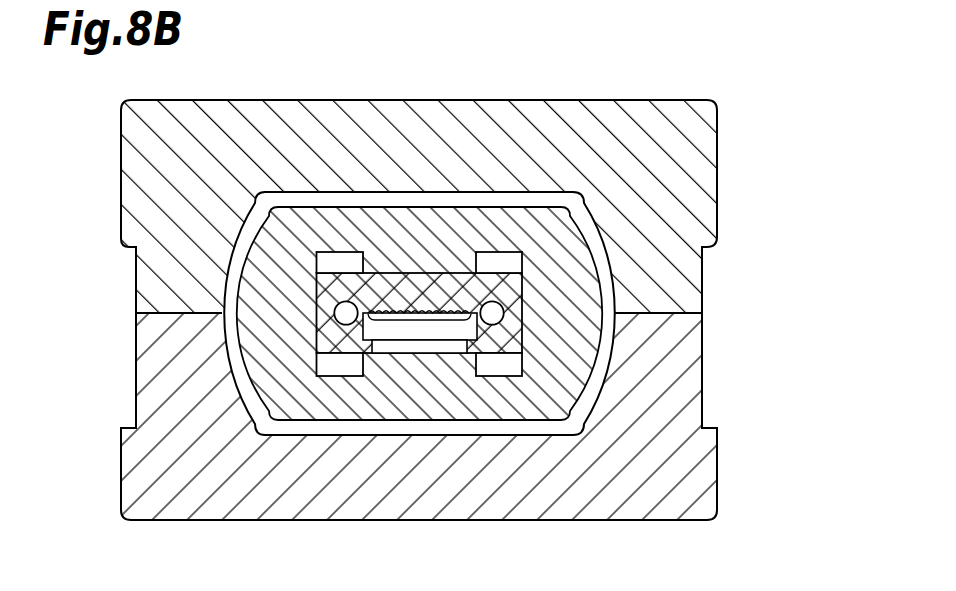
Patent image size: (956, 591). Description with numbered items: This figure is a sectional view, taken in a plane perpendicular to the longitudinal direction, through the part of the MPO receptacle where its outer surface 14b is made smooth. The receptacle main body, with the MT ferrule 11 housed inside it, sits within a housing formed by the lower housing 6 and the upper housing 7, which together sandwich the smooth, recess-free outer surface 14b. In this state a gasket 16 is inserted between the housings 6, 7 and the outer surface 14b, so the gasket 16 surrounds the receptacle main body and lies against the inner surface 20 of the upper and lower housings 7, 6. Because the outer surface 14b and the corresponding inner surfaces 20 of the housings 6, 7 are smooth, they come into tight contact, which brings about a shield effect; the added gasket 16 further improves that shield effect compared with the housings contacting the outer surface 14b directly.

The upper housing 7 is at (688, 147).
The lower housing 6 is at (668, 478).
The gasket 16 is at (578, 209).
The inner surface 20 is at (590, 236).
The outer surface 14b is at (440, 207).
The MT ferrule 11 is at (508, 293).